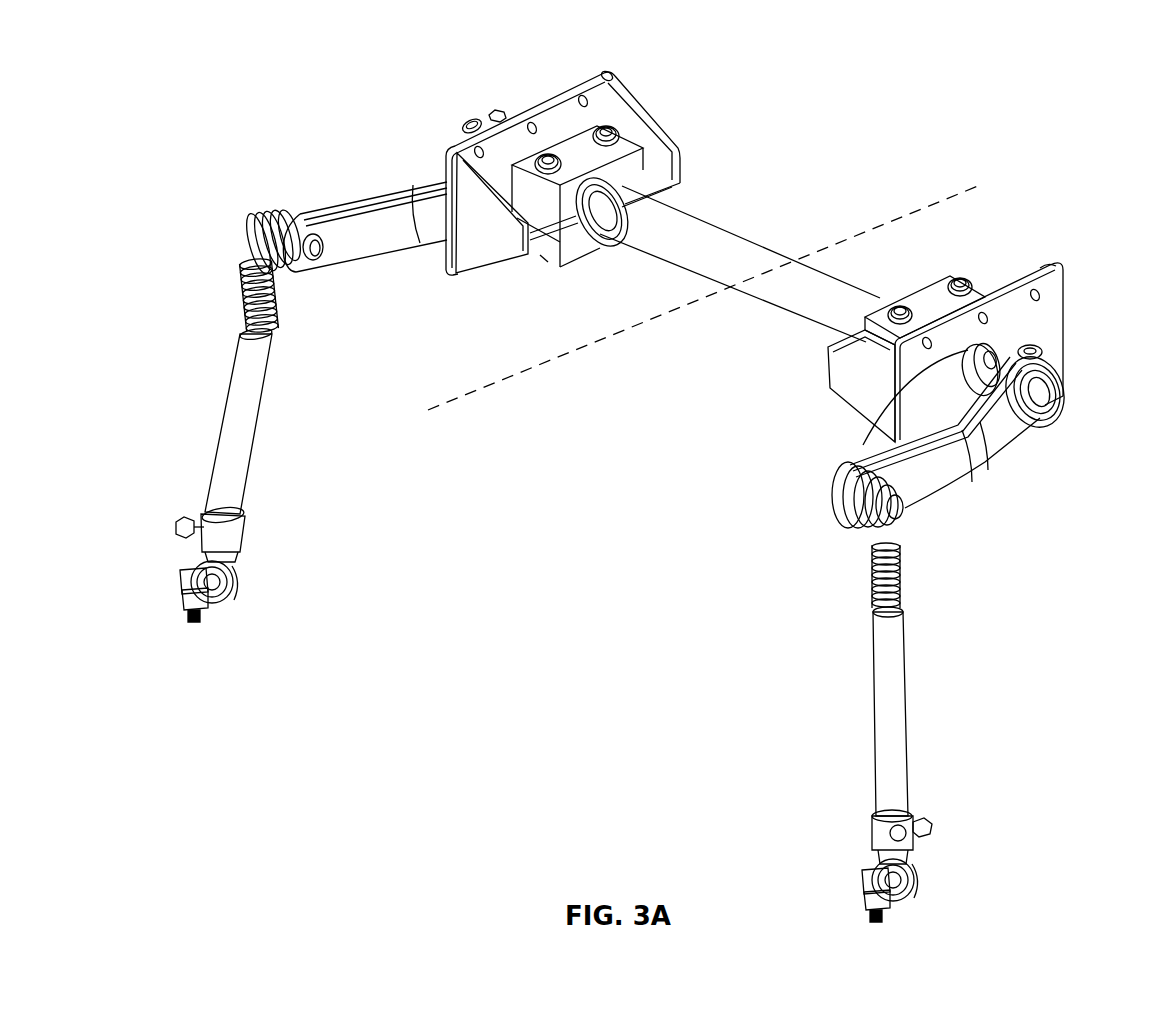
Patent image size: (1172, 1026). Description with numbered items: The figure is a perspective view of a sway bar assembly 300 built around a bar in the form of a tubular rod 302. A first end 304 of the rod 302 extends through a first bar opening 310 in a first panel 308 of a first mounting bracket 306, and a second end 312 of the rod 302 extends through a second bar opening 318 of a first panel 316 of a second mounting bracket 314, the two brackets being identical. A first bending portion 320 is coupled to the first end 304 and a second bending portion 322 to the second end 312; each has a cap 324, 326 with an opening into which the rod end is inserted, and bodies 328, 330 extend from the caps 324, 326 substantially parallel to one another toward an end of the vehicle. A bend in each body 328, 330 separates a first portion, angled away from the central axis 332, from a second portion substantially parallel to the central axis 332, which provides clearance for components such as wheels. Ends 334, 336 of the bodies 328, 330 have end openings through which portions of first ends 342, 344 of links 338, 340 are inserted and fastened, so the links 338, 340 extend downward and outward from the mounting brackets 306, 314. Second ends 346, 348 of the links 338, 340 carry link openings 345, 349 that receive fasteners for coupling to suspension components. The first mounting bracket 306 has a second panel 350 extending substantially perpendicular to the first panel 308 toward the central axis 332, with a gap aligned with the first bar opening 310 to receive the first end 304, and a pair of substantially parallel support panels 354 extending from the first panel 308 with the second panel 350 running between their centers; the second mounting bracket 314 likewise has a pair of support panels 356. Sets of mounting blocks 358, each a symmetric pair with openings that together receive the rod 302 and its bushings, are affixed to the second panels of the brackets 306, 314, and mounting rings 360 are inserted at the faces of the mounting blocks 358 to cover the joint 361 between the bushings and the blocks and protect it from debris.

The sway bar assembly 300 is at (1075, 92).
The tubular rod 302 is at (768, 290).
The first end 304 is at (498, 106).
The first mounting bracket 306 is at (608, 72).
The first panel 308 is at (440, 160).
The first bar opening 310 is at (540, 140).
The second end 312 is at (986, 372).
The second mounting bracket 314 is at (1028, 290).
The first panel 316 is at (1065, 340).
The second bar opening 318 is at (880, 432).
The first bending portion 320 is at (372, 238).
The second bending portion 322 is at (998, 440).
The cap 324 is at (465, 124).
The cap 326 is at (1058, 395).
The body 328 is at (320, 207).
The body 330 is at (940, 487).
The central axis 332 is at (493, 384).
The end 334 is at (306, 258).
The end 336 is at (830, 490).
The link 338 is at (228, 410).
The link 340 is at (878, 710).
The first end 342 is at (262, 236).
The first end 344 is at (848, 505).
The link opening 345 is at (210, 612).
The second end 346 is at (872, 862).
The second end 348 is at (232, 608).
The link opening 349 is at (910, 898).
The second panel 350 is at (660, 155).
The support panels 354 is at (485, 262).
The support panels 356 is at (830, 370).
The mounting blocks 358 is at (583, 238).
The mounting rings 360 is at (660, 180).
The joint 361 is at (560, 252).